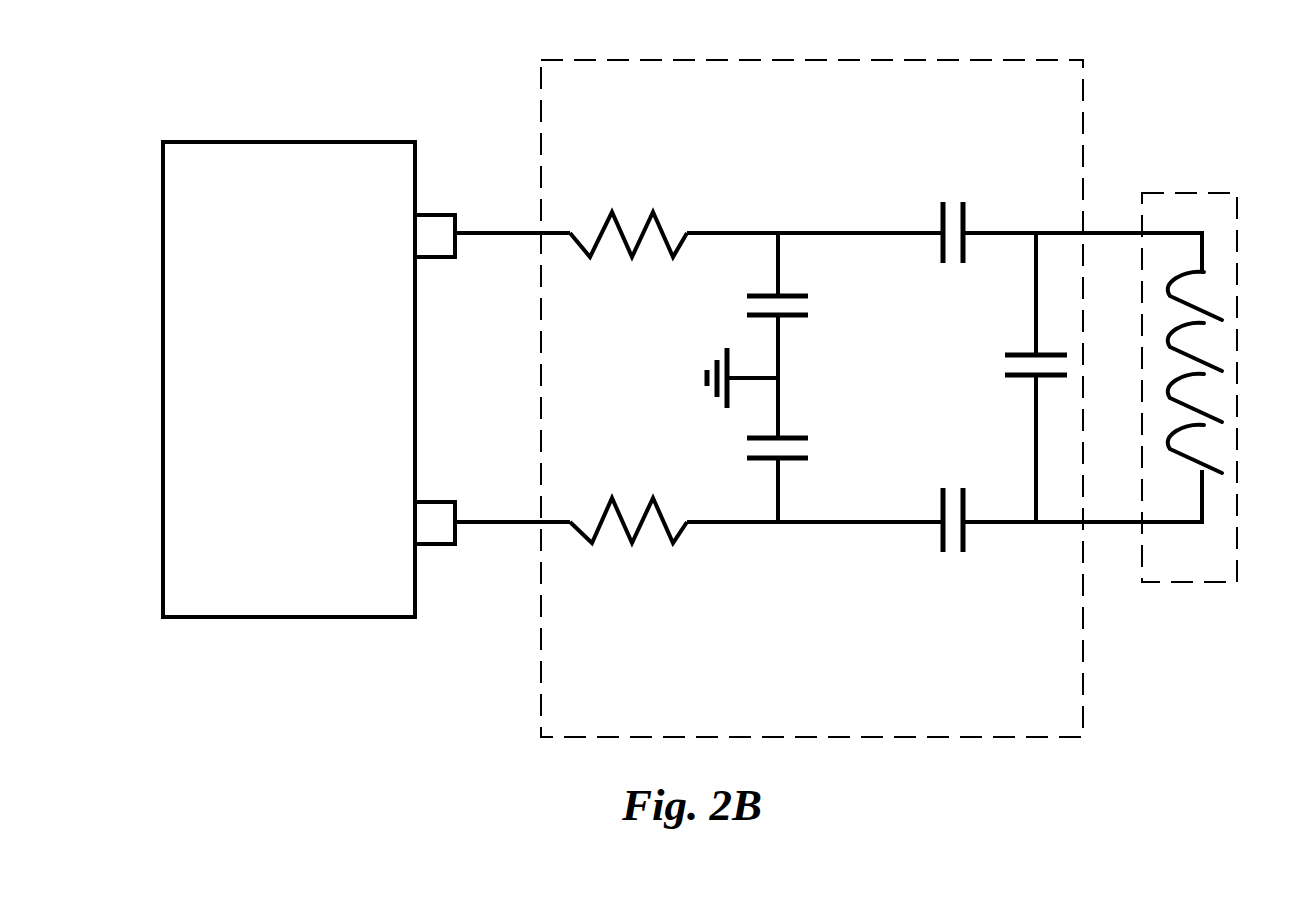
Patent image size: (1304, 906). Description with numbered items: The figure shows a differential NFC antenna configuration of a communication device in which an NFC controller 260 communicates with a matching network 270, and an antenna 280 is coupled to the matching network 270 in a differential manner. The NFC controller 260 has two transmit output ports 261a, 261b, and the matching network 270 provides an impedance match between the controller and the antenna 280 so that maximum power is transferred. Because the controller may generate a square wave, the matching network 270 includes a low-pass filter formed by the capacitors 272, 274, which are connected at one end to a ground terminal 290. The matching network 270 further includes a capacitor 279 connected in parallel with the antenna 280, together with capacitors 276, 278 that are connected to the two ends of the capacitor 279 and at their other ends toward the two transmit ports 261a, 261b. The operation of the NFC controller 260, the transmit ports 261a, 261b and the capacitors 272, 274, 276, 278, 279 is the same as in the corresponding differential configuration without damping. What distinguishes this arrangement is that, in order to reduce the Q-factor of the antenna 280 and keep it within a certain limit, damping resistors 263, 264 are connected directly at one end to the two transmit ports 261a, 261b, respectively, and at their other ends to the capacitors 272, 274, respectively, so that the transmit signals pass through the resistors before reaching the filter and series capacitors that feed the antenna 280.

The NFC controller 260 is at (241, 142).
The transmit output port 261a is at (443, 215).
The transmit output port 261b is at (443, 502).
The damping resistor 263 is at (612, 212).
The damping resistor 264 is at (612, 498).
The matching network 270 is at (767, 60).
The capacitor 272 is at (786, 436).
The capacitor 274 is at (784, 294).
The capacitor 276 is at (965, 218).
The capacitor 278 is at (940, 510).
The capacitor 279 is at (1002, 377).
The antenna 280 is at (1187, 193).
The ground 290 is at (715, 376).